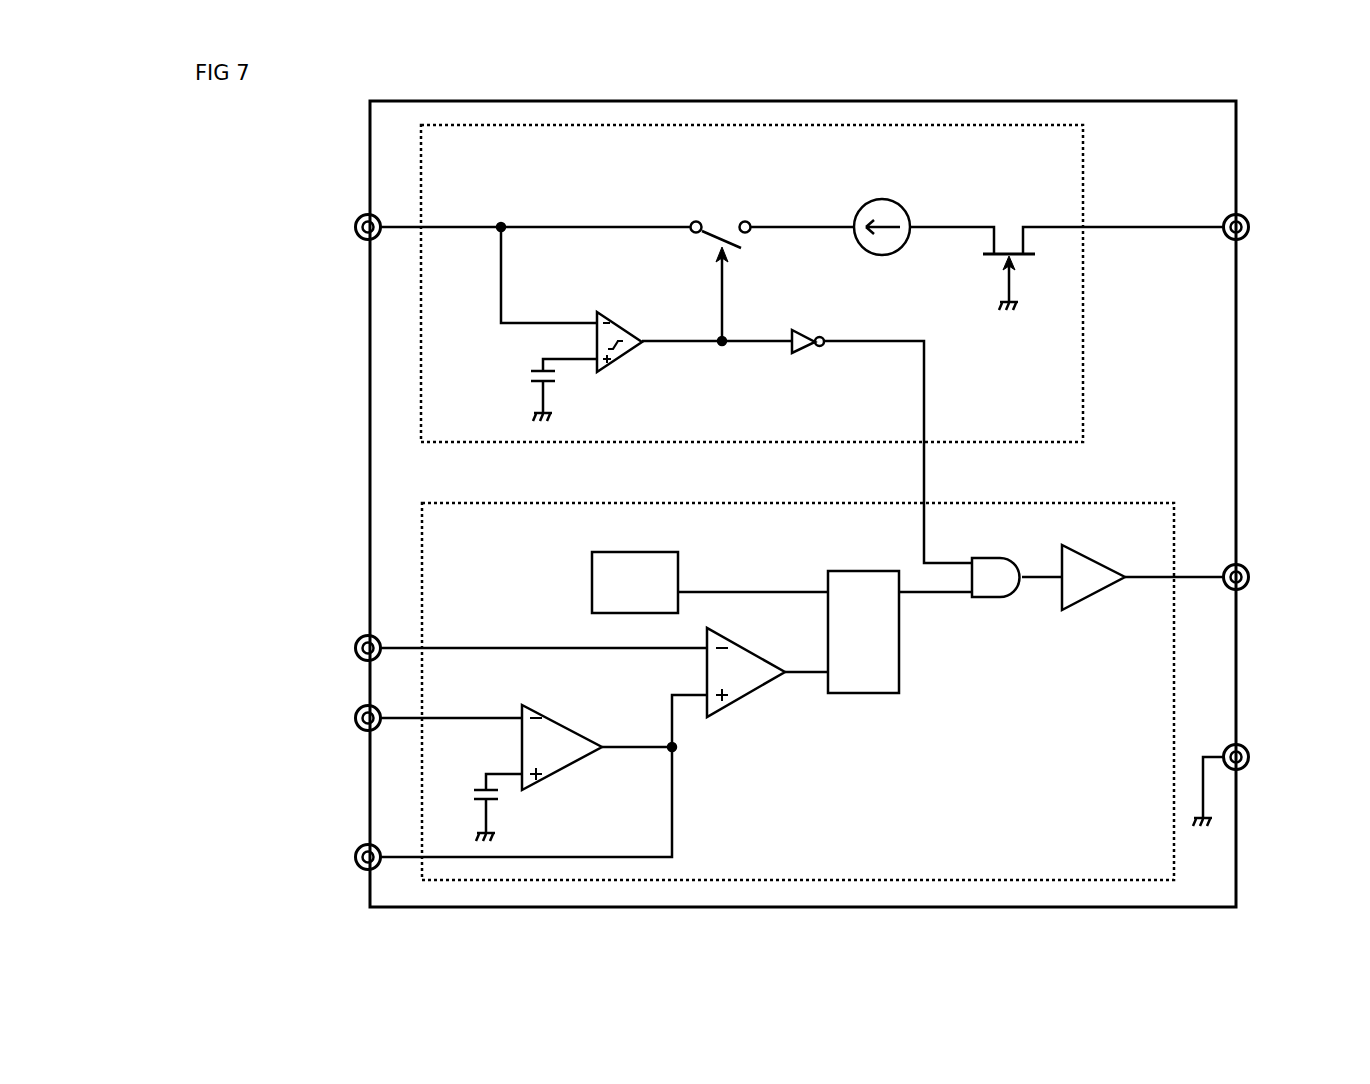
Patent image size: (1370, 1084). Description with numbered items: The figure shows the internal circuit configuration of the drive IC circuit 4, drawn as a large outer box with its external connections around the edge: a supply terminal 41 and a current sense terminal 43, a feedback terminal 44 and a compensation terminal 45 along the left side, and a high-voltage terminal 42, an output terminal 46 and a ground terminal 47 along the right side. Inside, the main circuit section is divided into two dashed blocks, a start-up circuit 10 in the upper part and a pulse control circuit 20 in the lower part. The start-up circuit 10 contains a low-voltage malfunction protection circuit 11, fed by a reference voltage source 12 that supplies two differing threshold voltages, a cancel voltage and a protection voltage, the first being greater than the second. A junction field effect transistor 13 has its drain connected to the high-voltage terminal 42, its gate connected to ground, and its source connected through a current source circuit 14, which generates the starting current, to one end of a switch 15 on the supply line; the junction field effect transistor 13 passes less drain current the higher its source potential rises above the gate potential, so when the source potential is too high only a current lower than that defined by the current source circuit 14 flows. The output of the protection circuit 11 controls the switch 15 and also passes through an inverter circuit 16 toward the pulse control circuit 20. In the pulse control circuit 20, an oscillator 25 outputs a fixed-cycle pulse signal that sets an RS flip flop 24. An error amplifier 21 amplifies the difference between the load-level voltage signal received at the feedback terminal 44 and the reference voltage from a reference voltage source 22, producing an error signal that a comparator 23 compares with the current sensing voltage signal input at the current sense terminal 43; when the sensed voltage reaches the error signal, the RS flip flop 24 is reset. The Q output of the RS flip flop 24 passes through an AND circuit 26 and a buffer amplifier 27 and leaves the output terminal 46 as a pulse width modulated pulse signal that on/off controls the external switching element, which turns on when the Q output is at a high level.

The drive IC circuit 4 is at (370, 138).
The start-up circuit 10 is at (1083, 284).
The low-voltage malfunction protection circuit (UVLO) 11 is at (616, 360).
The reference voltage source 12 is at (556, 383).
The junction field effect transistor (JFET) 13 is at (1006, 230).
The current source circuit 14 is at (894, 207).
The switch 15 is at (742, 248).
The inverter circuit 16 is at (804, 353).
The pulse control circuit 20 is at (1010, 503).
The error amplifier 21 is at (573, 724).
The reference voltage source 22 is at (498, 800).
The comparator 23 is at (752, 660).
The RS flip flop (RSFF) 24 is at (843, 571).
The oscillator 25 is at (597, 552).
The AND circuit 26 is at (986, 598).
The buffer amplifier 27 is at (1072, 606).
The VCC terminal 41 is at (358, 240).
The VH terminal 42 is at (1245, 216).
The IS terminal 43 is at (359, 640).
The FB terminal 44 is at (358, 730).
The COMP terminal 45 is at (359, 848).
The OUT terminal 46 is at (1245, 566).
The GND terminal 47 is at (1245, 746).